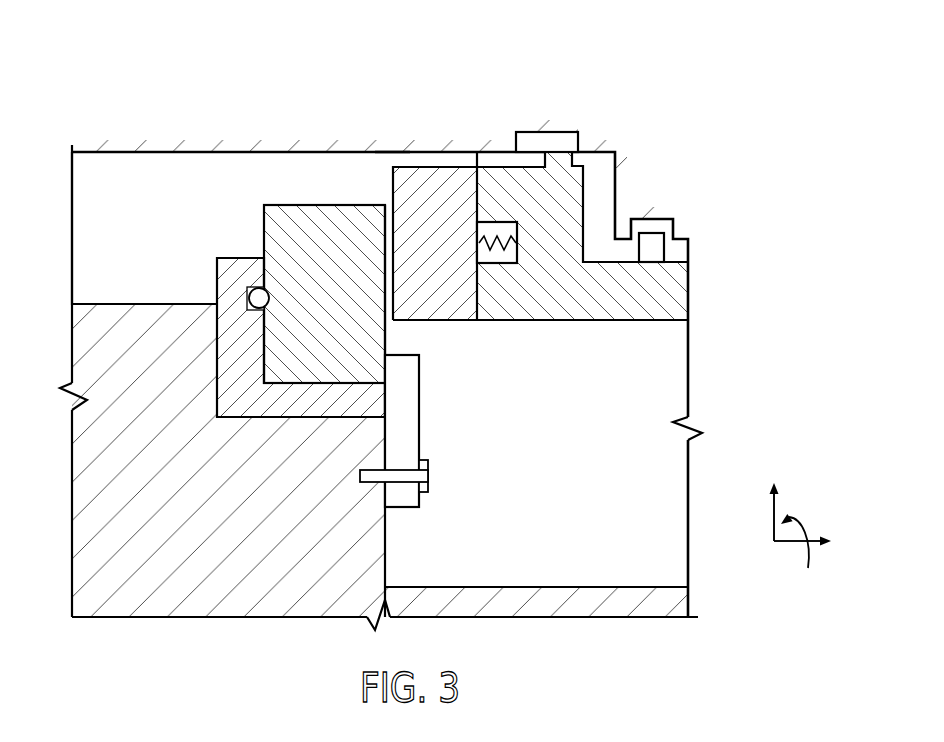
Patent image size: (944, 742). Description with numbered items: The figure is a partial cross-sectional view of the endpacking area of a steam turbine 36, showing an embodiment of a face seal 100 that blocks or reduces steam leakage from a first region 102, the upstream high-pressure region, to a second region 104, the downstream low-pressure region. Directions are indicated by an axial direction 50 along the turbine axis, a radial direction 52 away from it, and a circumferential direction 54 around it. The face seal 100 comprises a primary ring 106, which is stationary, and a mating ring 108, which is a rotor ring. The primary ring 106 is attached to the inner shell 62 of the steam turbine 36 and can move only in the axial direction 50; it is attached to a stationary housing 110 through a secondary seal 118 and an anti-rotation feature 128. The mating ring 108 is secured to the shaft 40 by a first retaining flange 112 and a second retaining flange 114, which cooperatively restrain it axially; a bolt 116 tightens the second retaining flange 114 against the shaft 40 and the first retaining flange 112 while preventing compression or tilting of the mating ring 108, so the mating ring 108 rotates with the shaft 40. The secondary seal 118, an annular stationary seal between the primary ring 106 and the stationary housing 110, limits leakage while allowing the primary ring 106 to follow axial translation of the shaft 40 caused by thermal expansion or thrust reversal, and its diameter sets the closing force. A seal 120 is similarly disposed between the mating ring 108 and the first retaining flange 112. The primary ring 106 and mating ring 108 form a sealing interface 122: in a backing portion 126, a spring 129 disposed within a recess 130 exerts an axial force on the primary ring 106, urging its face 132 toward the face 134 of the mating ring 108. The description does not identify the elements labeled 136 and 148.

The steam turbine 36 is at (138, 112).
The shaft 40 is at (438, 595).
The axial direction 50 is at (790, 548).
The radial direction 52 is at (773, 515).
The circumferential direction 54 is at (800, 525).
The inner shell 62 is at (391, 150).
The face seal 100 is at (342, 170).
The first region 102 is at (165, 210).
The second region 104 is at (610, 426).
The primary ring 106 is at (432, 177).
The mating ring 108 is at (272, 240).
The stationary housing 110 is at (620, 203).
The first retaining flange 112 is at (218, 268).
The second retaining flange 114 is at (408, 417).
The bolt 116 is at (408, 473).
The secondary seal 118 is at (655, 248).
The seal 120 is at (270, 303).
The sealing interface 122 is at (398, 332).
The backing portion 126 is at (500, 180).
The anti-rotation feature 128 is at (555, 145).
The spring 129 is at (490, 265).
The recess 130 is at (517, 258).
The face 132 is at (397, 307).
The face 134 is at (380, 265).
The gap 136 is at (367, 172).
The flow path 148 is at (380, 197).